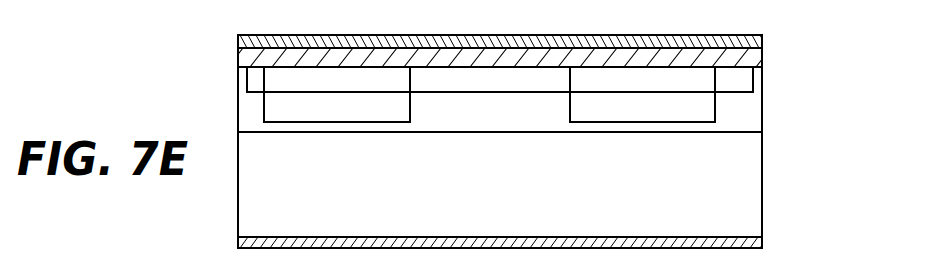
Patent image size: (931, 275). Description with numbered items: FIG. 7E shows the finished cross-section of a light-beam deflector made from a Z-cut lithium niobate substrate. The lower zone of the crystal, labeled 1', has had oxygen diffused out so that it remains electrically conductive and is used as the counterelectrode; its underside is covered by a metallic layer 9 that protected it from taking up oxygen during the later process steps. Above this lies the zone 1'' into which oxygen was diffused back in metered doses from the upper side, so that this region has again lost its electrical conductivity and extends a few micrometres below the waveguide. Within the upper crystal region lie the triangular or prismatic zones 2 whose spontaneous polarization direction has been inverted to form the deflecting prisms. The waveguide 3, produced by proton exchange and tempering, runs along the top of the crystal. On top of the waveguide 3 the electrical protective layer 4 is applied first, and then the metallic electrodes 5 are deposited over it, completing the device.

The metallic electrodes 5 is at (752, 35).
The electrical protective layer 4 is at (758, 58).
The waveguide 3 is at (740, 78).
The triangular or prismatic zones 2 is at (697, 108).
The zone of lost electrical conductivity 1'' is at (533, 109).
The electrically conductive lithium niobate crystal 1' is at (532, 184).
The metallic layer 9 is at (762, 238).